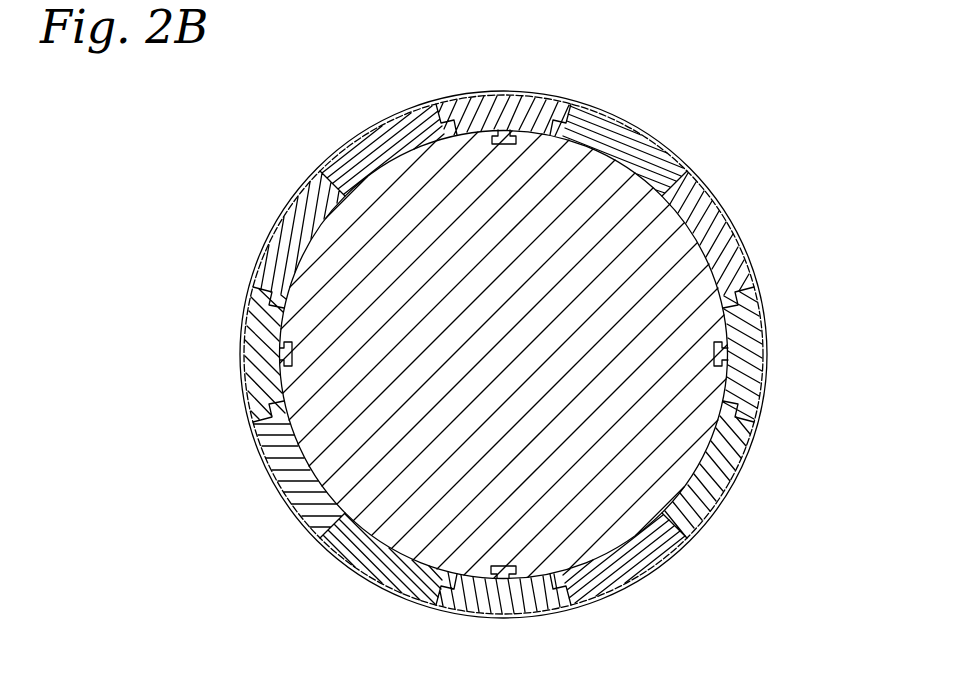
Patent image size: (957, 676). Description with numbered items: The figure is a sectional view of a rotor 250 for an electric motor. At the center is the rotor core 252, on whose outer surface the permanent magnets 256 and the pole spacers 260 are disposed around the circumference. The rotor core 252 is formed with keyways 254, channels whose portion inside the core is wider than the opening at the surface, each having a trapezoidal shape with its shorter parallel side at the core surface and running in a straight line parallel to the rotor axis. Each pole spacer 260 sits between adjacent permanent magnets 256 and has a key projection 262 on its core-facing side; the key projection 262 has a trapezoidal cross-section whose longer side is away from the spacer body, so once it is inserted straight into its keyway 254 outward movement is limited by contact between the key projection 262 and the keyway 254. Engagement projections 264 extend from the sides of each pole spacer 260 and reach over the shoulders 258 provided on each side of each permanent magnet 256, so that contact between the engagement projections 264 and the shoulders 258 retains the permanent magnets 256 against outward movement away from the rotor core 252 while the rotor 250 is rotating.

The rotor 250 is at (511, 339).
The rotor core 252 is at (660, 232).
The keyway 254 is at (287, 360).
The permanent magnet 256 is at (358, 552).
The shoulder 258 is at (764, 400).
The pole spacer 260 is at (258, 322).
The key projection 262 is at (760, 346).
The engagement projection 264 is at (752, 437).